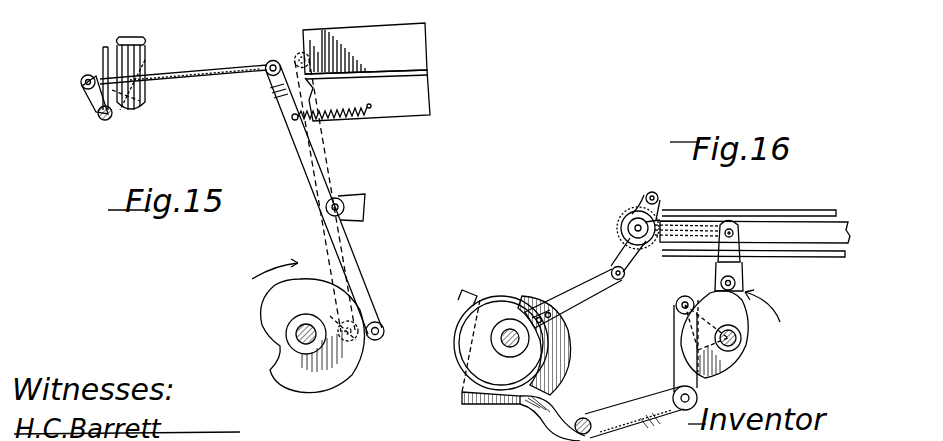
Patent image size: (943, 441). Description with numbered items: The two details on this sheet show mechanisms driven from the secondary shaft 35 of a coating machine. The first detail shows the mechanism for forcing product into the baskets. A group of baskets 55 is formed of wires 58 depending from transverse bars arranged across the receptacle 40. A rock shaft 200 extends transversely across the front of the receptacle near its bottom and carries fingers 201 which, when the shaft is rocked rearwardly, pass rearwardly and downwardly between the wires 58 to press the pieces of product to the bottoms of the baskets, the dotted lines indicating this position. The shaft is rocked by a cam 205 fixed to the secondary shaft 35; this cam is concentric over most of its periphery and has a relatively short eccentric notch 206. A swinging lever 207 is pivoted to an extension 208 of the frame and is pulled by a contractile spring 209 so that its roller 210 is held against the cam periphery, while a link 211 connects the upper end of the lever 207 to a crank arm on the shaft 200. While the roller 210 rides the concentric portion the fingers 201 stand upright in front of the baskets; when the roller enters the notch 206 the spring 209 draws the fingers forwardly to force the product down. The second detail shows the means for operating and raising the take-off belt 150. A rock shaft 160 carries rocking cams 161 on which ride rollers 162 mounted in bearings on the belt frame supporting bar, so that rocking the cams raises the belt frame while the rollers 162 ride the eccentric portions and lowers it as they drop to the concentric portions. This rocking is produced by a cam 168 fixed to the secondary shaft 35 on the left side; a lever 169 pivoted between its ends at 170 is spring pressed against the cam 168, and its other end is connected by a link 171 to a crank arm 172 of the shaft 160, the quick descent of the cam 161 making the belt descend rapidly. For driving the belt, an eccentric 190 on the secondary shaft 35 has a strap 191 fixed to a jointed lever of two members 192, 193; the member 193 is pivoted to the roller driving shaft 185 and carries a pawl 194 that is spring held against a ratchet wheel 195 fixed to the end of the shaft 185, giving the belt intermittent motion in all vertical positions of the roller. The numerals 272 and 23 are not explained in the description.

In FIG. 15, the group of baskets 55 is at (129, 37).
In FIG. 15, the fingers 201 is at (102, 60).
In FIG. 15, the lever 272 is at (92, 98).
In FIG. 15, the rock shaft 200 is at (103, 120).
In FIG. 15, the wires 58 is at (143, 101).
In FIG. 15, the link 211 is at (206, 70).
In FIG. 15, the receptacle 40 is at (420, 50).
In FIG. 15, the plate 23 is at (425, 88).
In FIG. 15, the contractile spring 209 is at (340, 122).
In FIG. 15, the swinging lever 207 is at (352, 242).
In FIG. 15, the extension of the frame 208 is at (357, 195).
In FIG. 15, the eccentric notch 206 is at (278, 344).
In FIG. 15, the secondary shaft 35 is at (305, 342).
In FIG. 16, the secondary shaft 35 is at (510, 328).
In FIG. 15, the cam 205 is at (314, 388).
In FIG. 15, the roller 210 is at (376, 341).
In FIG. 16, the take-off belt 150 is at (815, 209).
In FIG. 16, the pawl 194 is at (658, 206).
In FIG. 16, the ratchet wheel 195 is at (630, 208).
In FIG. 16, the driving shaft 185 is at (646, 213).
In FIG. 16, the lever member 193 is at (615, 262).
In FIG. 16, the lever member 192 is at (584, 290).
In FIG. 16, the eccentric 190 is at (465, 360).
In FIG. 16, the eccentric strap 191 is at (462, 306).
In FIG. 16, the cam 168 is at (572, 350).
In FIG. 16, the pivot 170 is at (584, 418).
In FIG. 16, the lever 169 is at (634, 412).
In FIG. 16, the link 171 is at (674, 372).
In FIG. 16, the crank arm 172 is at (676, 310).
In FIG. 16, the rollers 162 is at (746, 285).
In FIG. 16, the rock shaft 160 is at (745, 340).
In FIG. 16, the rocking cam 161 is at (716, 370).